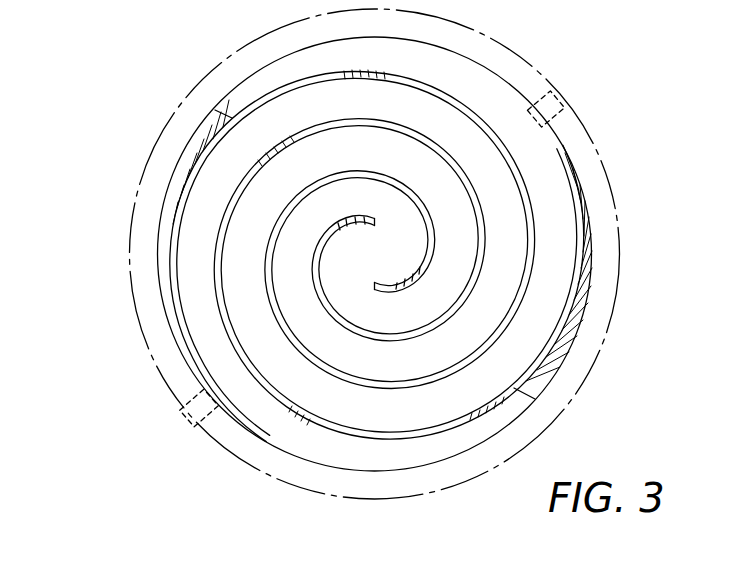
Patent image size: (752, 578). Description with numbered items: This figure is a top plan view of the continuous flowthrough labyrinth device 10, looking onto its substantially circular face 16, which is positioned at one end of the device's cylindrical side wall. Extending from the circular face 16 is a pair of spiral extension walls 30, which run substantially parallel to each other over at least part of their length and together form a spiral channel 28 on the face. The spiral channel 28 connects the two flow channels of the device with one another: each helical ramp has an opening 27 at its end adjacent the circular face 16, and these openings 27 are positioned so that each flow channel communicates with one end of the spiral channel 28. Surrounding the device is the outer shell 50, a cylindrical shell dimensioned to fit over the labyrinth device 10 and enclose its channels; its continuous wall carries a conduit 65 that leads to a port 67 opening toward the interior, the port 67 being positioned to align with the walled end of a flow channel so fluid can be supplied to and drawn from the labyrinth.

The continuous flowthrough labyrinth device 10 is at (483, 65).
The substantially circular face 16 is at (565, 257).
The opening 27 is at (254, 88).
The spiral channel 28 is at (192, 282).
The spiral extension walls 30 is at (411, 190).
The outer shell 50 is at (150, 356).
The conduit 65 is at (184, 436).
The port 67 is at (210, 430).